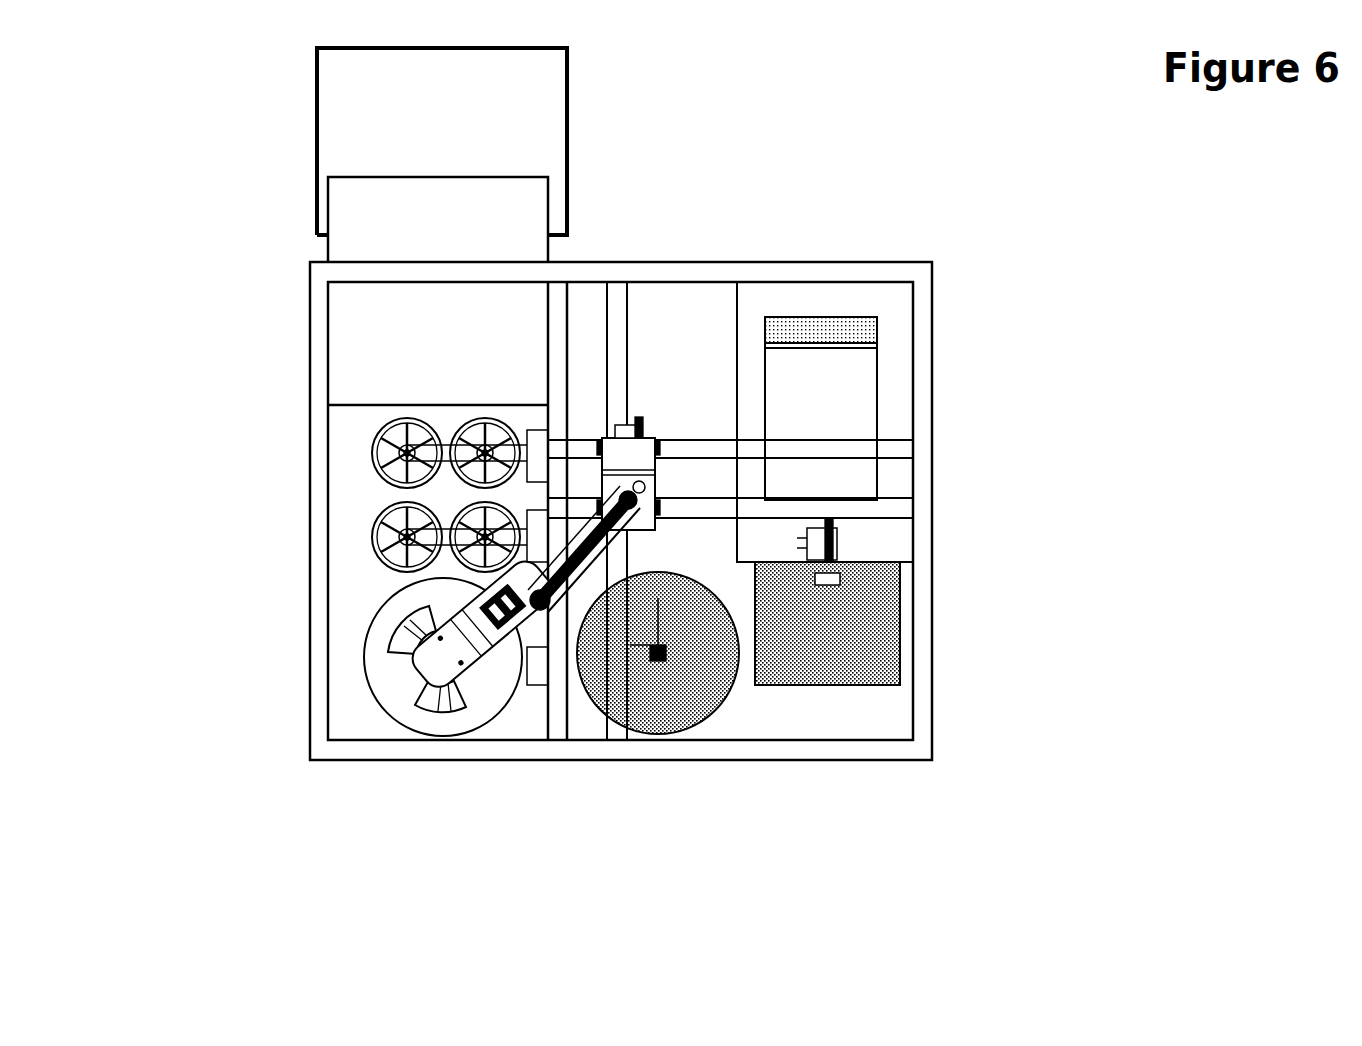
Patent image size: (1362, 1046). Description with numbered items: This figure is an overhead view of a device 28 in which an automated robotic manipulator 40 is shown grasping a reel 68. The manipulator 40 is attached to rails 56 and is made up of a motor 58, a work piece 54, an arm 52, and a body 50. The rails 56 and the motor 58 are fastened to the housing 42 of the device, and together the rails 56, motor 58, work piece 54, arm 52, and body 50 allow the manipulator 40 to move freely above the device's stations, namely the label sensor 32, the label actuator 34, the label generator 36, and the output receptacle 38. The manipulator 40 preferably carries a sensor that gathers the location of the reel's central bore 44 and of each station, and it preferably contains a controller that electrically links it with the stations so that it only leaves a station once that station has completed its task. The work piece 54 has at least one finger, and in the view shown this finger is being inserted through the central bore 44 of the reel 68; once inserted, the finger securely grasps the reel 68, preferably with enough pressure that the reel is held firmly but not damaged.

The device 28 is at (240, 252).
The output receptacle 38 is at (570, 113).
The housing 42 is at (310, 385).
The motor 58 is at (372, 519).
The rails 56 is at (886, 449).
The label generator 36 is at (892, 387).
The label actuator 34 is at (845, 650).
The label sensor 32 is at (660, 655).
The body 50 is at (640, 420).
The reel 68 is at (370, 657).
The central bore 44 is at (440, 687).
The work piece 54 is at (463, 682).
The arm 52 is at (537, 650).
The automated robotic manipulator 40 is at (572, 648).